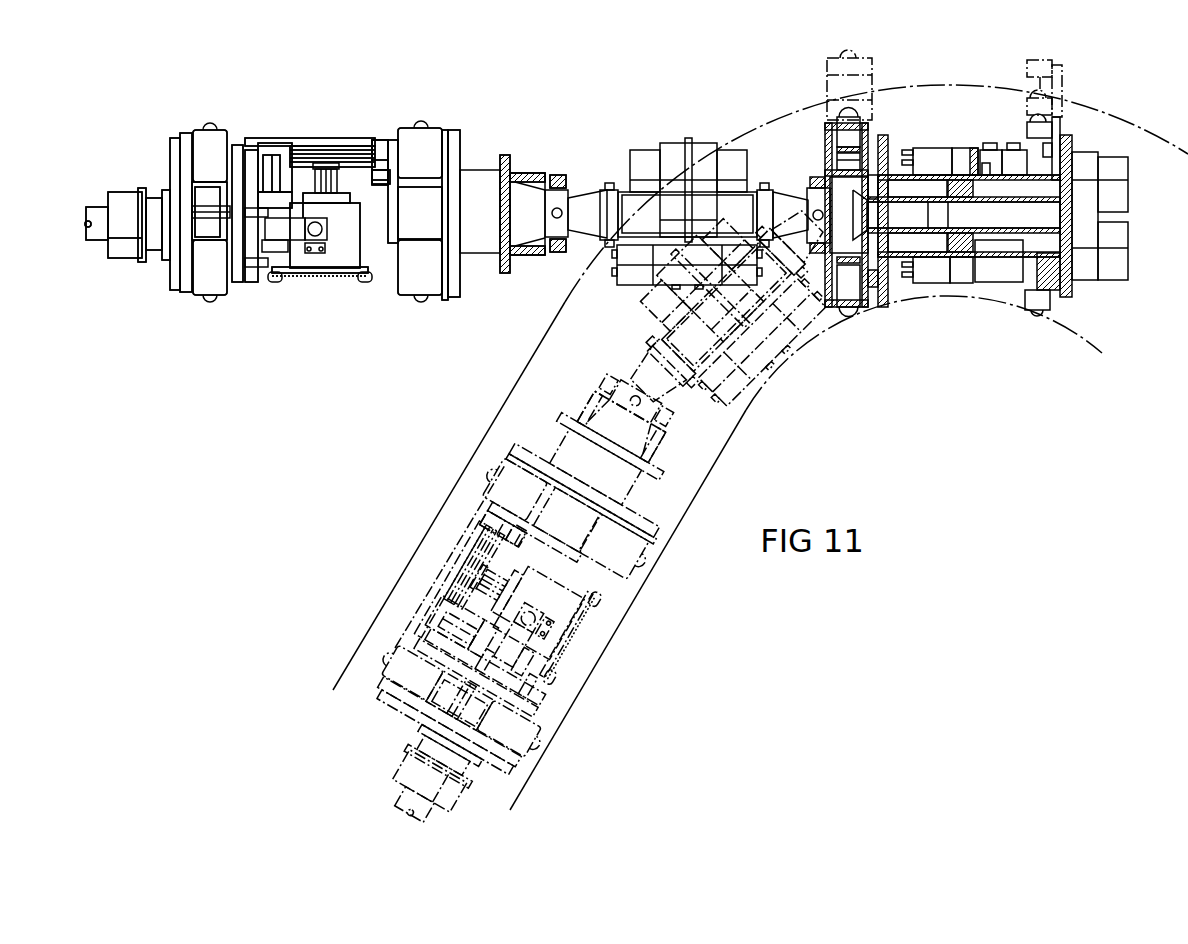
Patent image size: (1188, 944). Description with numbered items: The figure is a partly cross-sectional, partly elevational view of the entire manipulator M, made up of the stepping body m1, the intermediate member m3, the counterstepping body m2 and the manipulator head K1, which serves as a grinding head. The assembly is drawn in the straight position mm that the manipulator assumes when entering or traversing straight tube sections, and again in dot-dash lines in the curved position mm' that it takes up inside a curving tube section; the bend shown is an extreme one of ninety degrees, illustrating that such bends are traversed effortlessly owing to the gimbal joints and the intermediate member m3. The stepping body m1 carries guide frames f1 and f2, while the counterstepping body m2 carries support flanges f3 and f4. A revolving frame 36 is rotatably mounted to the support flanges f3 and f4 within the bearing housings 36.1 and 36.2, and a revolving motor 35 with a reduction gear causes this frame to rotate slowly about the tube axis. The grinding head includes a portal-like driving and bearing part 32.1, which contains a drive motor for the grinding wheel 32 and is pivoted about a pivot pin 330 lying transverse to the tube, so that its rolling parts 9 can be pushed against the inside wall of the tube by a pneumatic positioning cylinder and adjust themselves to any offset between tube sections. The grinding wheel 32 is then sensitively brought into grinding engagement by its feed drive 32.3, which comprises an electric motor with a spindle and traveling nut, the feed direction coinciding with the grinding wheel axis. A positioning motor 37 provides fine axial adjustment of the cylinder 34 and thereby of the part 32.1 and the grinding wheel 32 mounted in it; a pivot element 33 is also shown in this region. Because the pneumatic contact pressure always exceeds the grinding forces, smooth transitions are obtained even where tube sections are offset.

The counterstepping body m2 is at (386, 347).
The revolving motor 35 is at (126, 248).
The support flange f3 is at (190, 130).
The bearing housing 36.1 is at (205, 213).
The rolling parts 9 is at (210, 124).
The revolving frame 36 is at (240, 147).
The cylinder 34 is at (272, 170).
The pivot pin 33 is at (275, 172).
The positioning motor 37 is at (305, 140).
The feed drive 32.3 is at (328, 180).
The grinding wheel 32 is at (340, 273).
The driving and bearing part 32.1 is at (340, 250).
The pivot pin 330 is at (297, 232).
The manipulator head K1 is at (270, 280).
The support flange f4 is at (423, 120).
The bearing housing 36.2 is at (483, 187).
The straight position mm is at (552, 200).
The manipulator M is at (597, 145).
The intermediate member m3 is at (725, 132).
The guide frame f1 is at (823, 150).
The stepping body m1 is at (931, 129).
The guide frame f2 is at (1067, 132).
The curved position mm' is at (519, 599).